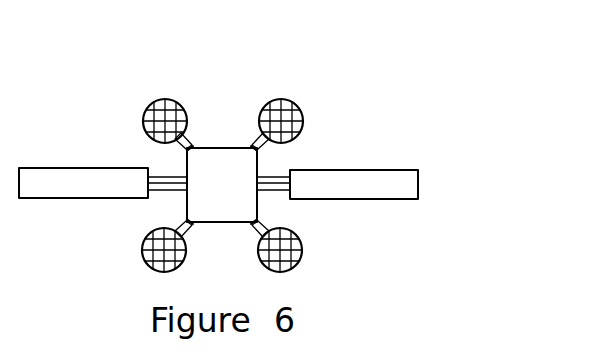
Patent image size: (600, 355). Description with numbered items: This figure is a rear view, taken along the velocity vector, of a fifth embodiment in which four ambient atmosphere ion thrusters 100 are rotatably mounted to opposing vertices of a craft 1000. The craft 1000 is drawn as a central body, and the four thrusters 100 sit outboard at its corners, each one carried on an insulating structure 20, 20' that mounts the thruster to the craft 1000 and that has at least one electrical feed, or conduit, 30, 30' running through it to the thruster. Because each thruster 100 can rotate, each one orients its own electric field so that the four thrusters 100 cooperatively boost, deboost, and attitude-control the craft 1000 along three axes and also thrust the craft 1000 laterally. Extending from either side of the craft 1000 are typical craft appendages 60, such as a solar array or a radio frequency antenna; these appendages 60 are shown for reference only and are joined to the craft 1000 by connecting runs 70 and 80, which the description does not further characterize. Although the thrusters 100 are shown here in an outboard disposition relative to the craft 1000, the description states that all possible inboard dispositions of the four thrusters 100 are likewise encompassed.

The craft 1000 is at (243, 200).
The craft appendages 60 is at (92, 195).
The signal connection line 70 is at (165, 176).
The power connection line 80 is at (164, 189).
The ambient atmosphere ion thrusters 100 is at (143, 115).
The insulating structure 20 is at (118, 160).
The insulating structure 20' is at (334, 160).
The electrical feed (conduit) 30 is at (142, 166).
The electrical feed (conduit) 30' is at (291, 161).